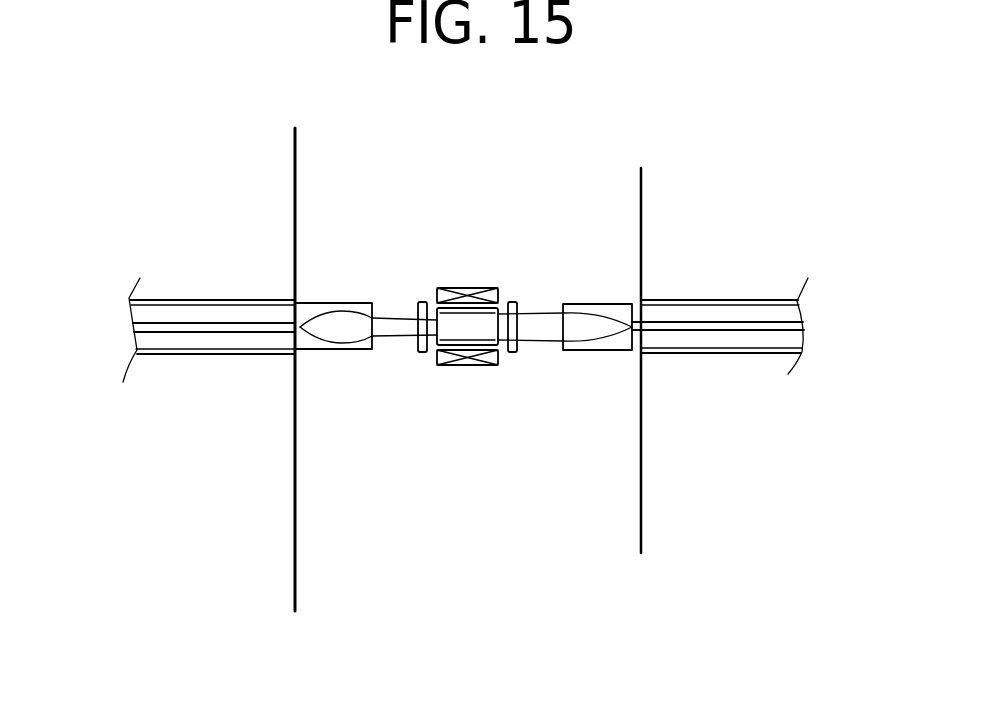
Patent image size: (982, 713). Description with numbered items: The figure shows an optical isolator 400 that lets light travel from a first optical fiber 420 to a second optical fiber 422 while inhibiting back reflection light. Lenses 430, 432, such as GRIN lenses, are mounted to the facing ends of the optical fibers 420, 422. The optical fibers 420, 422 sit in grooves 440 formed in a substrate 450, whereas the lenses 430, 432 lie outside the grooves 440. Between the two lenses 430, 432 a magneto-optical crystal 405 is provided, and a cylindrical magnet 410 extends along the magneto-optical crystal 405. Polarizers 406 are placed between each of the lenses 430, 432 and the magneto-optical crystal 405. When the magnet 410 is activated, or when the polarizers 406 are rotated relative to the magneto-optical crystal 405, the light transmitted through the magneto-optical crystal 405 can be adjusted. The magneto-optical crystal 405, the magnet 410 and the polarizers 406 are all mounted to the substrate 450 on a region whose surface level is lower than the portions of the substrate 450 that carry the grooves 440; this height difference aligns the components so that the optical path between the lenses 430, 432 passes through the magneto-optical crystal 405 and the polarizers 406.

The optical isolator 400 is at (592, 178).
The magneto-optical crystal 405 is at (511, 297).
The polarizers 406 is at (514, 303).
The cylindrical magnet 410 is at (503, 369).
The first optical fiber 420 is at (199, 317).
The second optical fiber 422 is at (718, 313).
The lens 430 is at (326, 304).
The lens 432 is at (589, 304).
The grooves 440 is at (233, 353).
The substrate 450 is at (210, 202).